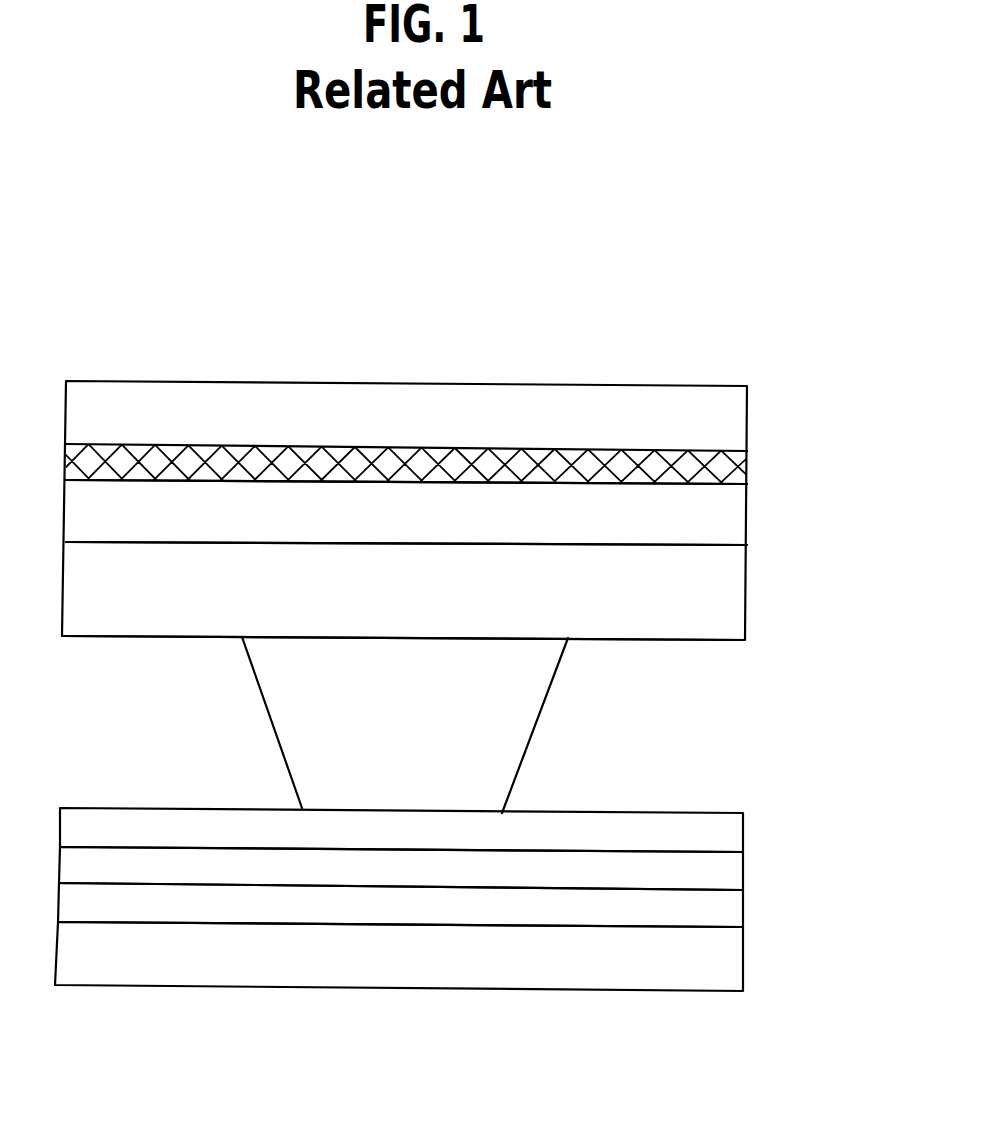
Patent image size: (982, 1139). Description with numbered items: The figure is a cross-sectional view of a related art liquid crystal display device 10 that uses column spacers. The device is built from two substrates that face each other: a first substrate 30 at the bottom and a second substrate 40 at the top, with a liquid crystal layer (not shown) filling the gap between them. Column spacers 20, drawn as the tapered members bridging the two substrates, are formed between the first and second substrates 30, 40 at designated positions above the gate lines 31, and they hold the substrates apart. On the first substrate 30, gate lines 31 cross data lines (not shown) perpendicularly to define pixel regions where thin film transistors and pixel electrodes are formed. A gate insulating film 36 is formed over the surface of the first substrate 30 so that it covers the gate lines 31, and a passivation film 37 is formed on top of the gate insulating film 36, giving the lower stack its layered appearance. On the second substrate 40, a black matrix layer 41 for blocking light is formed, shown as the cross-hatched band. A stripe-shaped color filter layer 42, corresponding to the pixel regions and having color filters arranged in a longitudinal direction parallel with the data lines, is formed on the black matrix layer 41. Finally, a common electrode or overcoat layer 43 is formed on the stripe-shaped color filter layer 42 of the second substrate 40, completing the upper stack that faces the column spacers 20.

The liquid crystal display device 10 is at (434, 603).
The column spacers 20 is at (522, 730).
The first substrate 30 is at (728, 962).
The gate lines 31 is at (728, 913).
The gate insulating film 36 is at (728, 872).
The passivation film 37 is at (728, 835).
The second substrate 40 is at (434, 510).
The black matrix layer 41 is at (727, 475).
The stripe-shaped color filter layer 42 is at (727, 528).
The common electrode or overcoat layer 43 is at (727, 603).